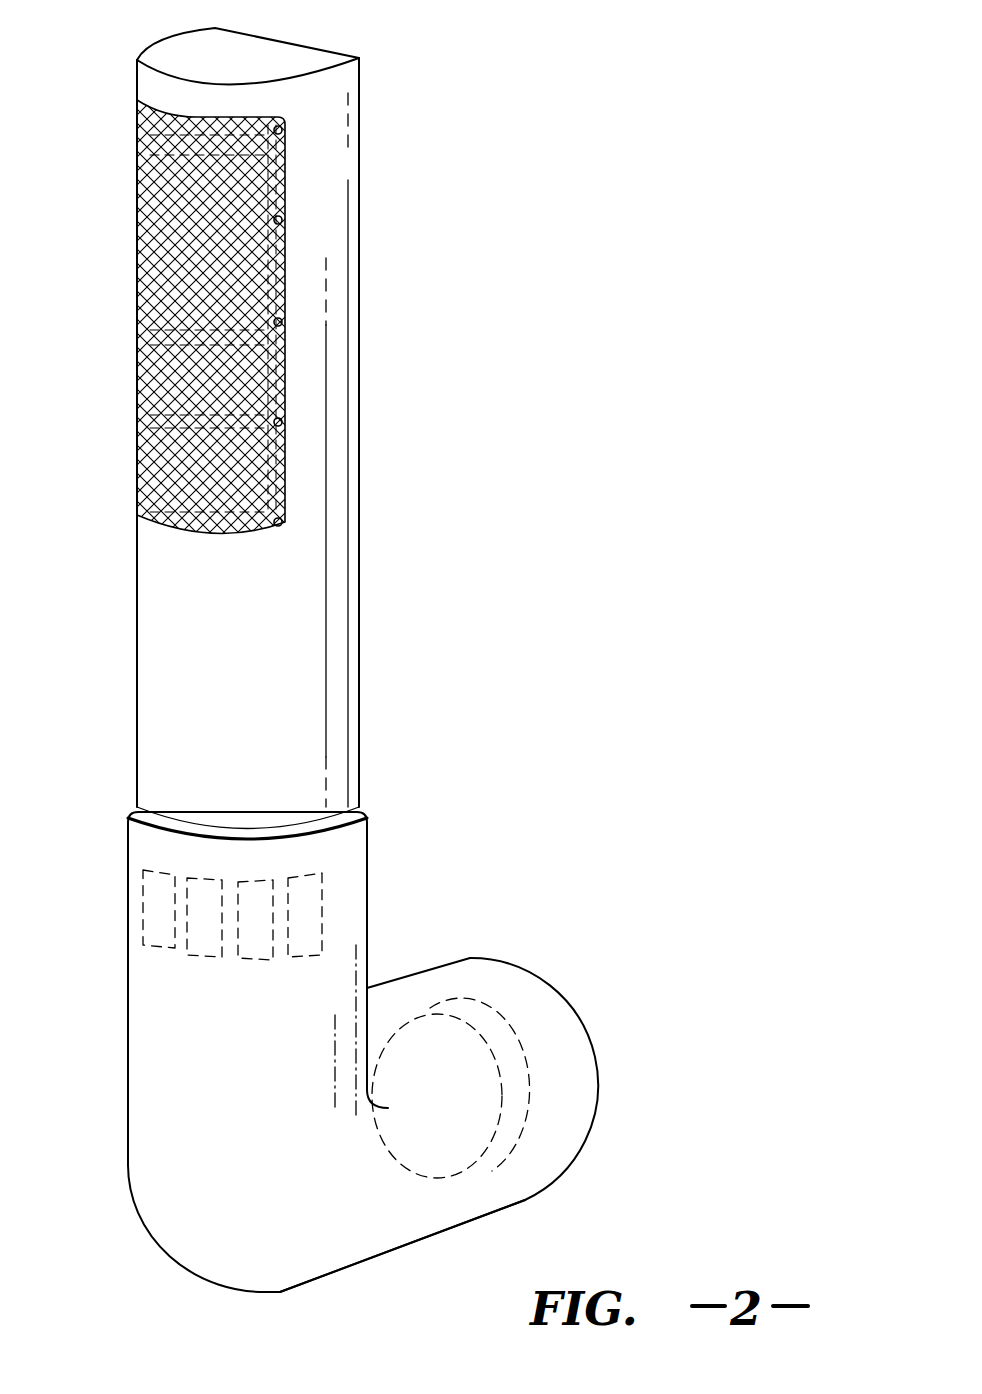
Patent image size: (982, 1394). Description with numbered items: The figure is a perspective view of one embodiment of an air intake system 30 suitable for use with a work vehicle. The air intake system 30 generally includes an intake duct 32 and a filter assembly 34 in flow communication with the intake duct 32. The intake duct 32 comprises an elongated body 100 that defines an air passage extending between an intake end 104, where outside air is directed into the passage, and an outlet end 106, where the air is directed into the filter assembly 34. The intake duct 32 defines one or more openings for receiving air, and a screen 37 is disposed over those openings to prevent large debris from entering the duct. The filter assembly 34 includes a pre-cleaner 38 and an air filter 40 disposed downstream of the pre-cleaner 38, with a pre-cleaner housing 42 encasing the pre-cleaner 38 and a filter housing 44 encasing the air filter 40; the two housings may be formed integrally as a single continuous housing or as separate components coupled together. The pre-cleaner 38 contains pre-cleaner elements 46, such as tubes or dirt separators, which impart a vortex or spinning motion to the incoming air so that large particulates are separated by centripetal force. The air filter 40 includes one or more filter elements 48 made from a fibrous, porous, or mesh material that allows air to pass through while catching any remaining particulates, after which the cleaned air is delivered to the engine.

The air intake system 30 is at (563, 290).
The intake duct 32 is at (120, 470).
The filter assembly 34 is at (410, 925).
The screen 37 is at (137, 270).
The pre-cleaner 38 is at (165, 1003).
The air filter 40 is at (553, 1155).
The pre-cleaner housing 42 is at (128, 838).
The filter housing 44 is at (393, 1253).
The pre-cleaner elements 46 is at (143, 942).
The filter elements 48 is at (557, 1078).
The elongated body 100 is at (335, 430).
The intake end 104 is at (347, 158).
The outlet end 106 is at (333, 722).